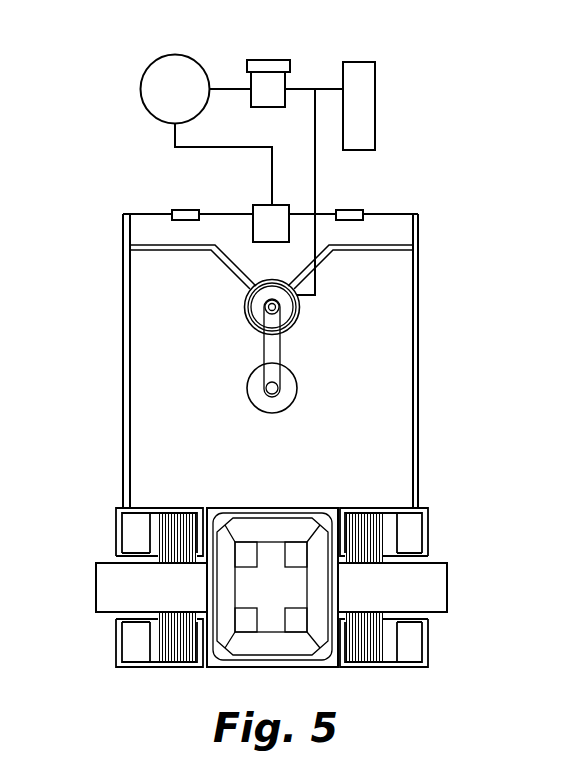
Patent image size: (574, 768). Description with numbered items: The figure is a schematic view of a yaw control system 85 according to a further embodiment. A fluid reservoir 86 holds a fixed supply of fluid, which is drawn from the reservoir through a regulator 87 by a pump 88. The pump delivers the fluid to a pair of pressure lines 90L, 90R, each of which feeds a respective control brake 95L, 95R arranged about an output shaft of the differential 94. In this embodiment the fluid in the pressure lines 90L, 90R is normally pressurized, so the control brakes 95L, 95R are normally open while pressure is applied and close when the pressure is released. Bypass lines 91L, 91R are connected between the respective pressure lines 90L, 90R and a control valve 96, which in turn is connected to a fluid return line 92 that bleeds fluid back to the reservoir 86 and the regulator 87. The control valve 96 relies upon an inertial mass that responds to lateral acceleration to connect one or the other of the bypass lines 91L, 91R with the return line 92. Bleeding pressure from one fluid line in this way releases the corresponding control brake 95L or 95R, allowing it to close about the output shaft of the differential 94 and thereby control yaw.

The yaw control system 85 is at (425, 178).
The fluid reservoir 86 is at (370, 95).
The regulator 87 is at (265, 72).
The pump 88 is at (147, 86).
The left pressure line 90L is at (123, 316).
The right pressure line 90R is at (418, 347).
The left bypass line 91L is at (158, 252).
The right bypass line 91R is at (383, 250).
The fluid return line 92 is at (316, 180).
The differential 94 is at (278, 508).
The left control brake 95L is at (116, 527).
The right control brake 95R is at (428, 520).
The control valve 96 is at (247, 325).